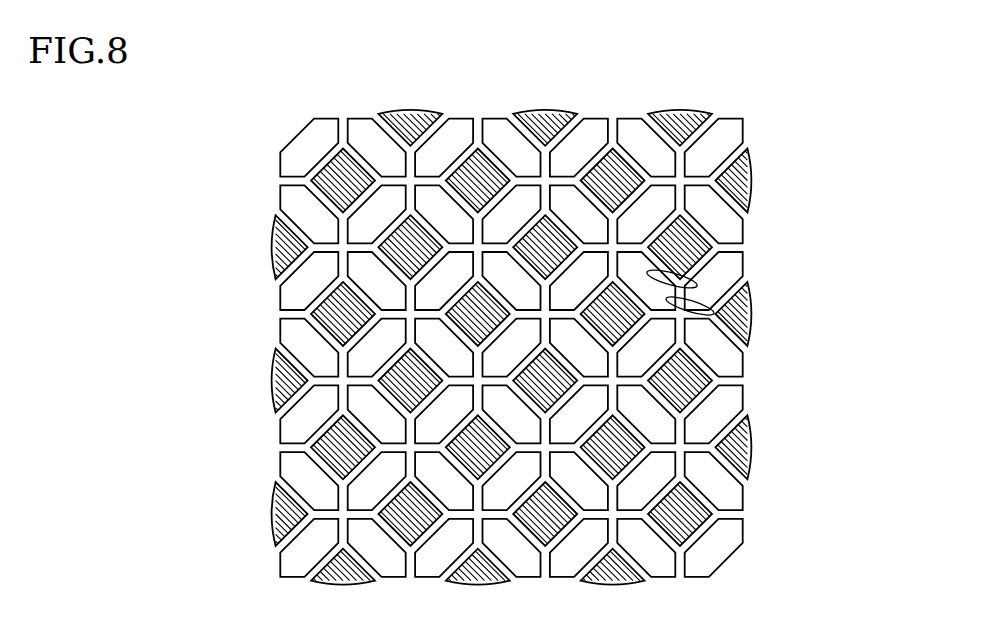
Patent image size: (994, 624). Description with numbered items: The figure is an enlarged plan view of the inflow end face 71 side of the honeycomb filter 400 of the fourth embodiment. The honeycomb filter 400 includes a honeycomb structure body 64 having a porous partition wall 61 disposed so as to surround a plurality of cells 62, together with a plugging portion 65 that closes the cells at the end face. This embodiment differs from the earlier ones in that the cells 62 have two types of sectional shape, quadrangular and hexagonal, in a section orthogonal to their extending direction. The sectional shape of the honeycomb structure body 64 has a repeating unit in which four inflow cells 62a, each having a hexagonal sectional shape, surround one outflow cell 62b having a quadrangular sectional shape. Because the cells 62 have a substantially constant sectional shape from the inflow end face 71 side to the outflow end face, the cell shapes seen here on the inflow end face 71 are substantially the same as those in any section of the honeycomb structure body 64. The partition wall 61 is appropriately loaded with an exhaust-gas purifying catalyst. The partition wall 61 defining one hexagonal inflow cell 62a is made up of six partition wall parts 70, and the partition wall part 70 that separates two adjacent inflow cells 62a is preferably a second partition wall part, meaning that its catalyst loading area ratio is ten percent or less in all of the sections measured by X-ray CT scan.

The honeycomb filter 400 is at (822, 34).
The honeycomb structure body 64 is at (757, 130).
The inflow end face 71 is at (349, 107).
The partition wall 61 is at (645, 218).
The plugging portion 65 is at (480, 178).
The cells 62 is at (763, 294).
The inflow cell 62a is at (716, 187).
The outflow cell 62b is at (683, 382).
The partition wall part 70 is at (697, 286).